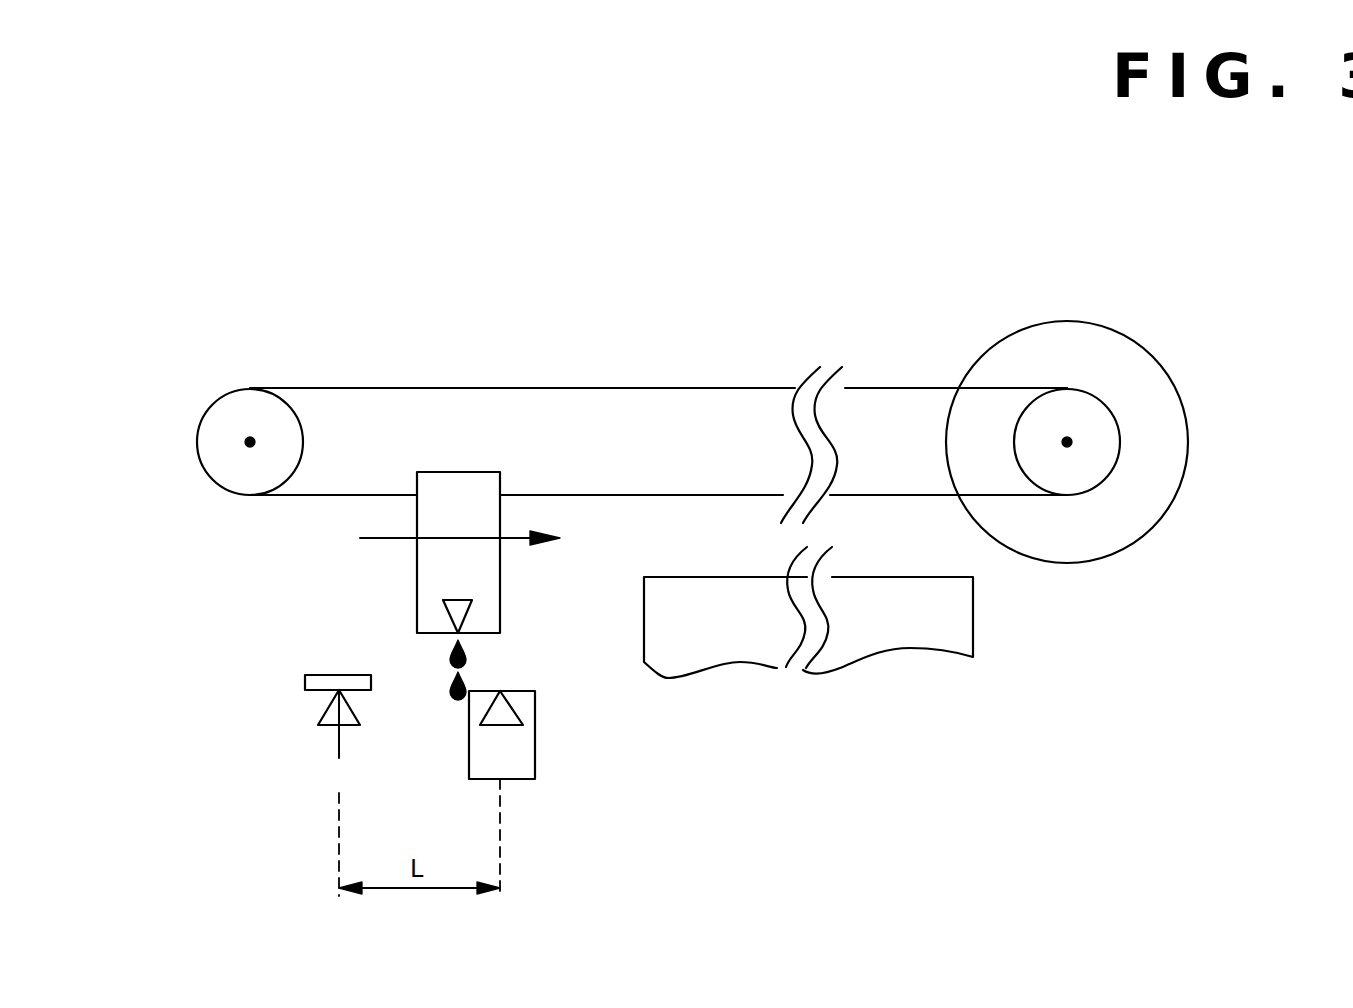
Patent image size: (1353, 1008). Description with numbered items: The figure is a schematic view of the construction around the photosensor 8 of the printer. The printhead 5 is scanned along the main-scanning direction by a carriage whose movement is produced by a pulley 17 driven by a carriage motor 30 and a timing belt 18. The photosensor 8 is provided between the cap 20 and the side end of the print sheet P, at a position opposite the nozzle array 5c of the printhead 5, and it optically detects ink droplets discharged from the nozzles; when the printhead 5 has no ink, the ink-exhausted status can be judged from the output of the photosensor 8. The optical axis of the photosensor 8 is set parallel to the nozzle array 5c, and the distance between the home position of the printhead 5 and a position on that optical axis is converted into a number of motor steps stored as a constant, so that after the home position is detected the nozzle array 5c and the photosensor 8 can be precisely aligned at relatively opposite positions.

The printhead 5 is at (452, 472).
The nozzle array 5c is at (470, 612).
The photosensor 8 is at (500, 691).
The pulley 17 is at (241, 389).
The timing belt 18 is at (712, 388).
The cap 20 is at (339, 675).
The carriage motor 30 is at (1137, 334).
The print sheet P is at (708, 577).